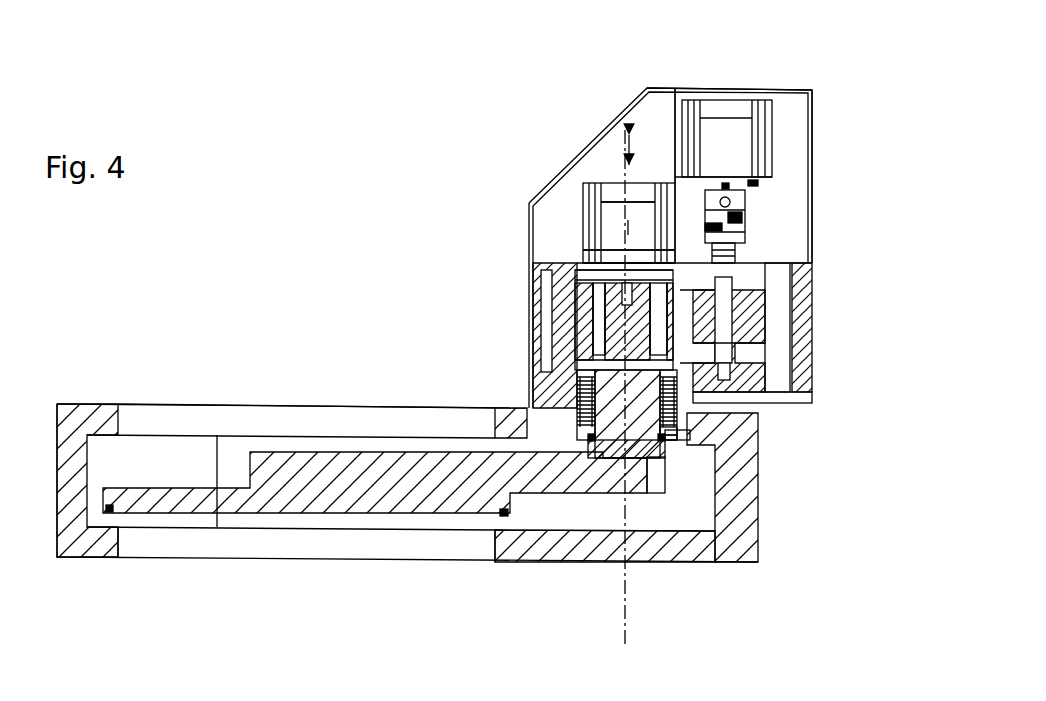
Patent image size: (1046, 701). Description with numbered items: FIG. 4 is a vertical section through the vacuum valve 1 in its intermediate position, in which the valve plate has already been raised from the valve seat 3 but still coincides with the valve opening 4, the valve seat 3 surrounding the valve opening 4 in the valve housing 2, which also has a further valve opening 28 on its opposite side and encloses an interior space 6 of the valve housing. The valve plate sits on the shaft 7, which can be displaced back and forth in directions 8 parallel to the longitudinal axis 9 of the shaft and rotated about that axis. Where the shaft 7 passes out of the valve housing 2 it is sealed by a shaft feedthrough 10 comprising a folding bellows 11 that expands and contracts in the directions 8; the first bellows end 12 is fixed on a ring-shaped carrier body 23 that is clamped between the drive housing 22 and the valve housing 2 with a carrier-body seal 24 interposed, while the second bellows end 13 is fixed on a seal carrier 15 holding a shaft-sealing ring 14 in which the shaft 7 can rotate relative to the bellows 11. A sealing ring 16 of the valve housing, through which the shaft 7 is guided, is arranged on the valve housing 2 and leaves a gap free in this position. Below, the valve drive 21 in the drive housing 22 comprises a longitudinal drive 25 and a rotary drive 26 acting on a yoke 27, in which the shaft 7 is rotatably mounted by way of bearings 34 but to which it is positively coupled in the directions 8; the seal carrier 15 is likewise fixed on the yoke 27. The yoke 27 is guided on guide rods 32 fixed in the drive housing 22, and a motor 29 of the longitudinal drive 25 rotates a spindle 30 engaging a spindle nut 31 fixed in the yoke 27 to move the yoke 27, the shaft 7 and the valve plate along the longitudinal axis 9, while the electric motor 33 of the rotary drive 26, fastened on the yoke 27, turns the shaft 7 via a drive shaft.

The valve 1 is at (838, 238).
The valve housing 2 is at (84, 418).
The valve seat 3 is at (110, 527).
The valve opening 4 is at (272, 541).
The interior space of the valve housing 6 is at (125, 460).
The shaft 7 is at (560, 333).
The directions parallel to the longitudinal axis 8 is at (628, 148).
The longitudinal axis of the shaft 9 is at (617, 262).
The shaft feedthrough 10 is at (647, 401).
The bellows 11 is at (586, 400).
The first bellows end 12 is at (655, 445).
The second bellows end 13 is at (750, 182).
The shaft-sealing ring 14 is at (587, 365).
The seal carrier 15 is at (690, 364).
The sealing ring of the valve housing 16 is at (680, 437).
The valve drive 21 is at (790, 115).
The drive housing 22 is at (813, 130).
The carrier body 23 is at (668, 430).
The carrier-body seal 24 is at (672, 432).
The longitudinal drive 25 is at (758, 198).
The rotary drive 26 is at (578, 262).
The yoke 27 is at (676, 183).
The further valve opening 28 is at (227, 404).
The motor 29 is at (725, 128).
The spindle 30 is at (723, 298).
The spindle nut 31 is at (748, 344).
The guide rods 32 is at (778, 378).
The motor 33 is at (615, 215).
The bearings 34 is at (655, 340).